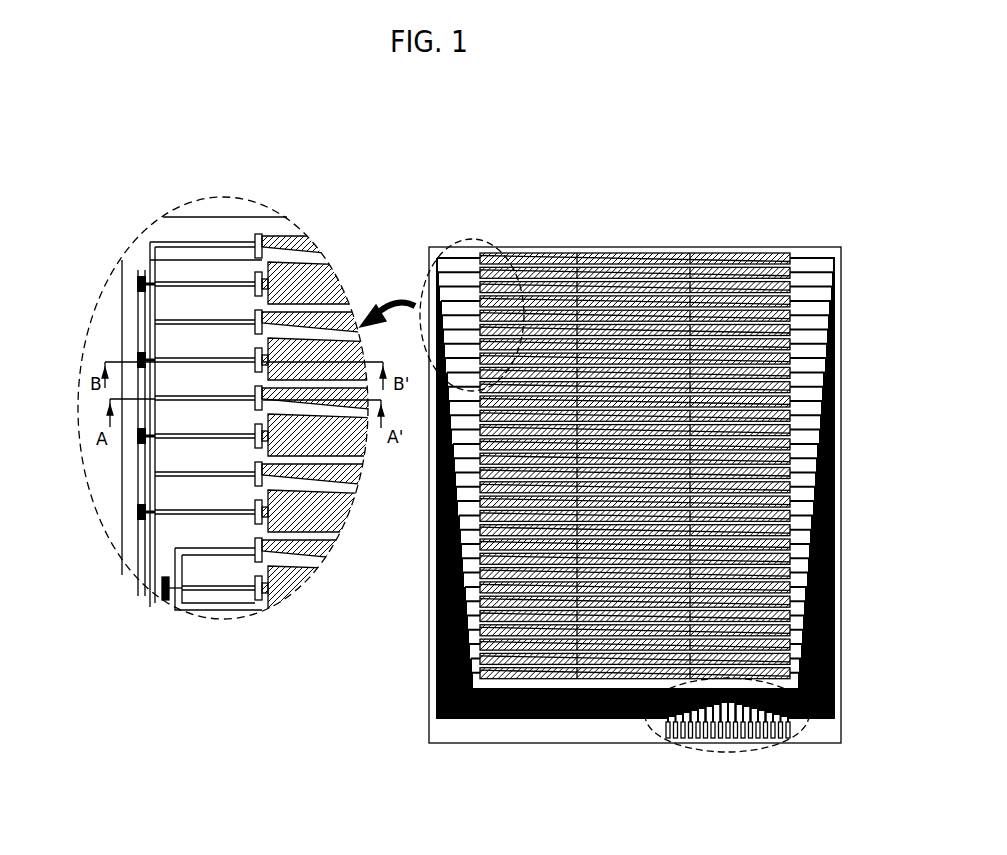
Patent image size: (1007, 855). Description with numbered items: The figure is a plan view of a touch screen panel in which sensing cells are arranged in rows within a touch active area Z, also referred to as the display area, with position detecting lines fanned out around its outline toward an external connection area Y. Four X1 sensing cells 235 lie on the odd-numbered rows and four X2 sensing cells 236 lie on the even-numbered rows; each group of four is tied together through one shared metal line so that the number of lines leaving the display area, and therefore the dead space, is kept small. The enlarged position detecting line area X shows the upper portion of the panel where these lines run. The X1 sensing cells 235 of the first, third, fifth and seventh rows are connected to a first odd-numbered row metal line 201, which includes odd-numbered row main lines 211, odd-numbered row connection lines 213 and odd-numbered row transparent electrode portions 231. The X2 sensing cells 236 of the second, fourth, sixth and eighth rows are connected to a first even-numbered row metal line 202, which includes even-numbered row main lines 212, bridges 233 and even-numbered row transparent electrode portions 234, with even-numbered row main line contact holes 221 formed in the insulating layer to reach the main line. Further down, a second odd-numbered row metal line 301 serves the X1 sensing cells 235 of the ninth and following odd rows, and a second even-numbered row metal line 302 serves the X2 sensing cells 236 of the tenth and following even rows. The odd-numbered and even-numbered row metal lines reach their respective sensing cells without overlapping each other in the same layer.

The first odd-numbered row metal line 201 is at (240, 153).
The first even-numbered row metal line 202 is at (50, 232).
The odd-numbered row main line 211 is at (137, 243).
The even-numbered row main line 212 is at (140, 322).
The odd-numbered row connection line 213 is at (210, 243).
The even-numbered row main line contact hole 221 is at (140, 283).
The odd-numbered row transparent electrode portion 231 is at (257, 233).
The bridge 233 is at (200, 282).
The even-numbered row transparent electrode portion 234 is at (150, 260).
The X1 sensing cell 235 is at (285, 218).
The X2 sensing cell 236 is at (302, 267).
The second odd-numbered row metal line 301 is at (177, 567).
The second even-numbered row metal line 302 is at (162, 597).
The position detecting line area X is at (487, 249).
The external connection area Y is at (730, 752).
The touch active area Z is at (633, 247).